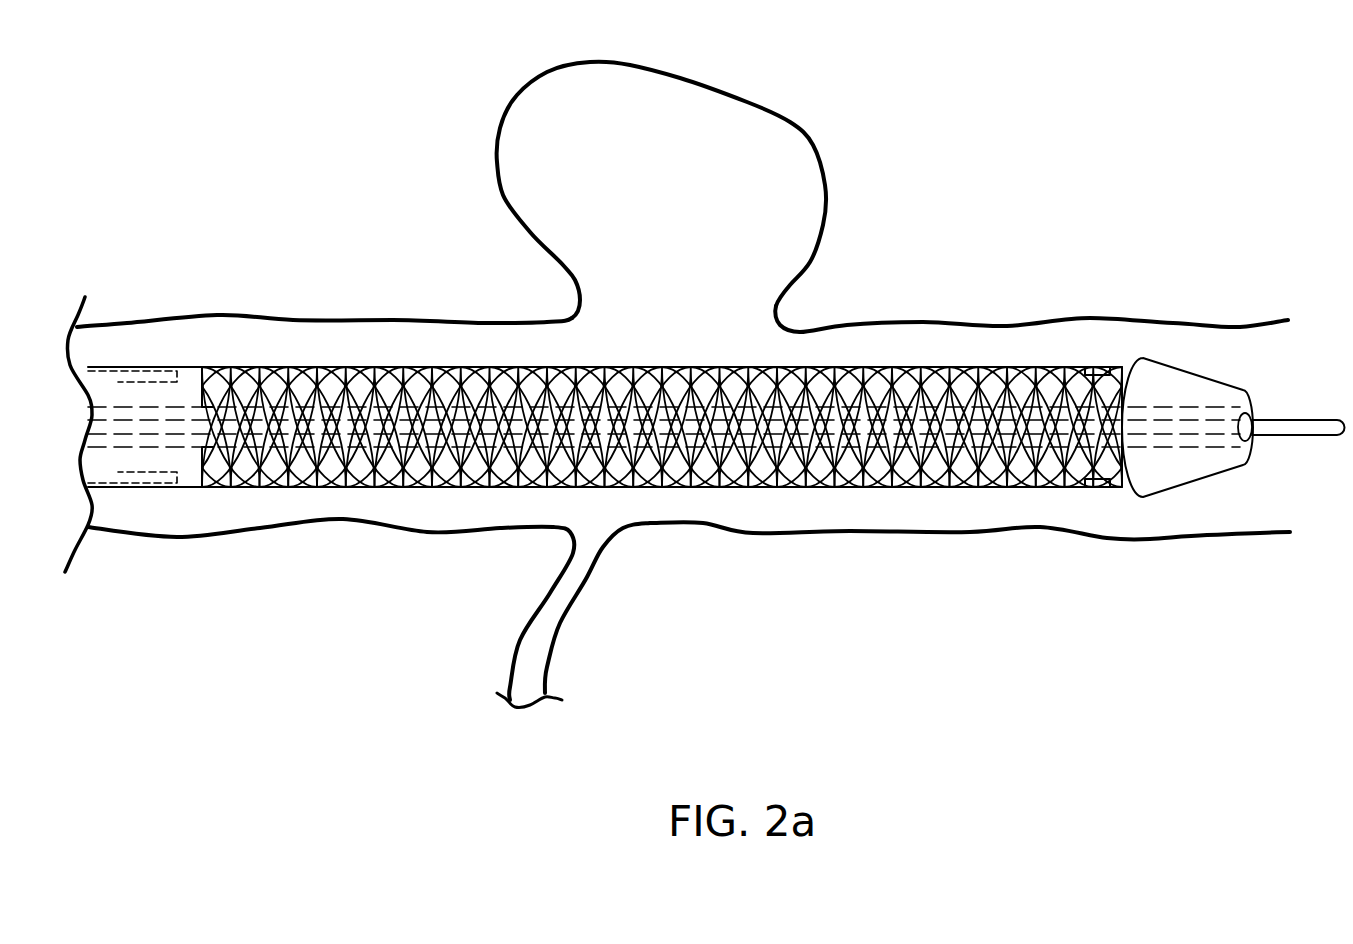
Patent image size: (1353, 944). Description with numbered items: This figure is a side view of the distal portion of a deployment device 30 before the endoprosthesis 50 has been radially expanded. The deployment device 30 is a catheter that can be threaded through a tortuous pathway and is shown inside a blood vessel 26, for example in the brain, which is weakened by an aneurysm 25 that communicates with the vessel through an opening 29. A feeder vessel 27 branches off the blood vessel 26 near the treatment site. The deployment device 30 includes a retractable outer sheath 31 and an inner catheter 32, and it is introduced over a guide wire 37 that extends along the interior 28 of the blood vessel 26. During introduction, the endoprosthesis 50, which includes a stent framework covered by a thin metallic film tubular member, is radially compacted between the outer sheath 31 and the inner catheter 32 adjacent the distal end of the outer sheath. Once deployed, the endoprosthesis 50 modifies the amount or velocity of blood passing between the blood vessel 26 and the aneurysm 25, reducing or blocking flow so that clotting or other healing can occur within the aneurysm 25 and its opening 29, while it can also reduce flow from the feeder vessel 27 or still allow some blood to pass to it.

The aneurysm 25 is at (792, 190).
The blood vessel 26 is at (425, 318).
The feeder vessel 27 is at (560, 605).
The interior of vessel 28 is at (305, 503).
The opening 29 is at (700, 325).
The deployment device 30 is at (922, 362).
The retractable outer sheath 31 is at (315, 370).
The inner catheter 32 is at (236, 400).
The guide wire 37 is at (1273, 418).
The endoprosthesis 50 is at (937, 462).